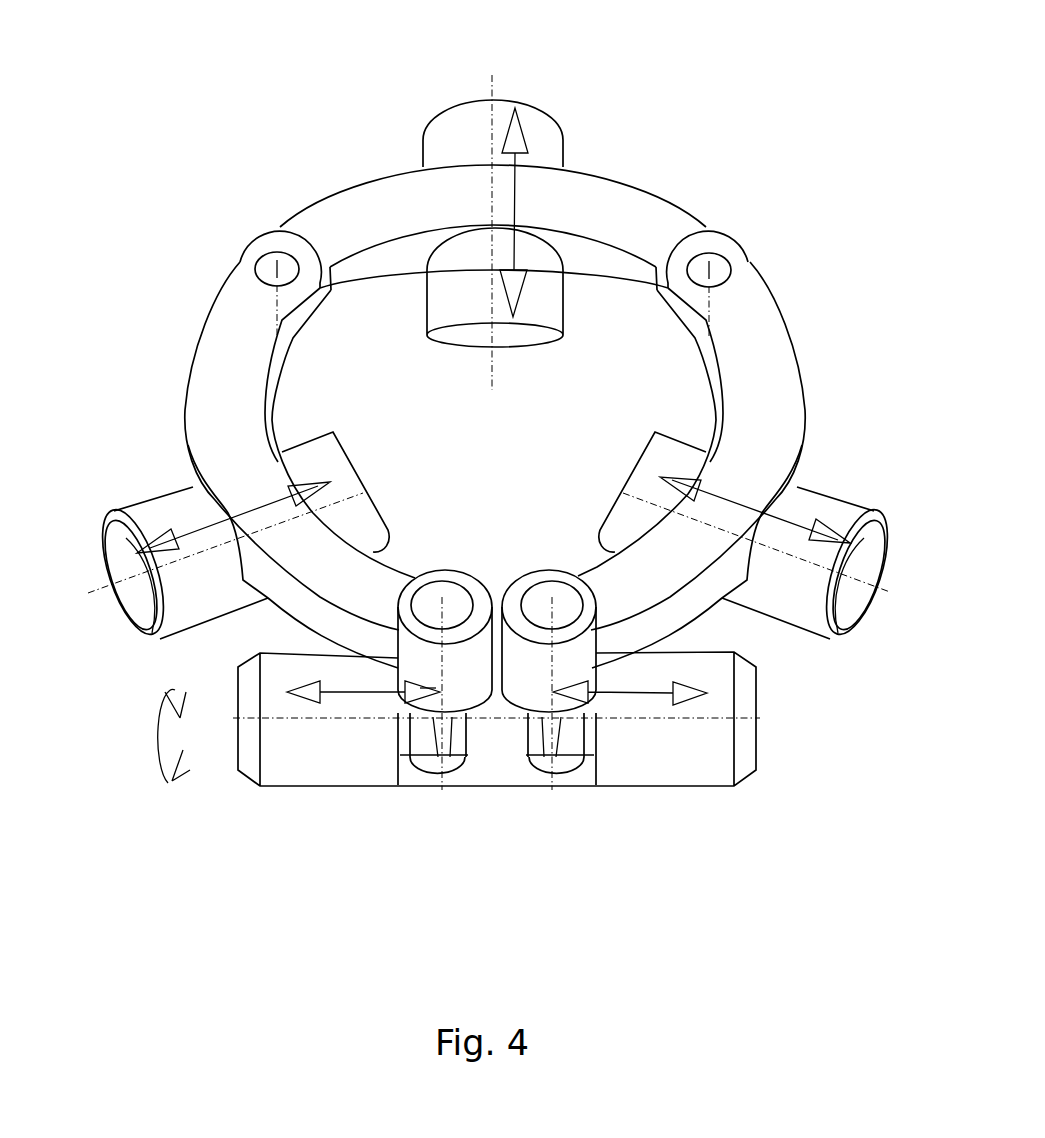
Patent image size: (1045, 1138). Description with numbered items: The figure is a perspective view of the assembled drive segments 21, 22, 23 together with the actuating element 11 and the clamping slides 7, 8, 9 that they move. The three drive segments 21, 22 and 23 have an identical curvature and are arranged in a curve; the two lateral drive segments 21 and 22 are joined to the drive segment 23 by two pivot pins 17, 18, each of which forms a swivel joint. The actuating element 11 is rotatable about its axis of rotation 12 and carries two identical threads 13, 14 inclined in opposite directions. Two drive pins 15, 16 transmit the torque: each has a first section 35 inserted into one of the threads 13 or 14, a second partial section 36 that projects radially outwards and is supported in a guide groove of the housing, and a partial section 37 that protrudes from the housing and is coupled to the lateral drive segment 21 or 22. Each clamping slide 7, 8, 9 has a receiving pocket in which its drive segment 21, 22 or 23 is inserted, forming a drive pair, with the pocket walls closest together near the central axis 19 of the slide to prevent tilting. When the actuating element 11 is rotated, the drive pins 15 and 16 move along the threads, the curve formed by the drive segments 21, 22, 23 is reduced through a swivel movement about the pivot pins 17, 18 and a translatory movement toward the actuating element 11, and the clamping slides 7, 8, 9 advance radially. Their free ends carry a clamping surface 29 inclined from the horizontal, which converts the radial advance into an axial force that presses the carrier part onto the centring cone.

The clamping slide 7 is at (195, 603).
The clamping slide 8 is at (802, 610).
The clamping slide 9 is at (470, 138).
The actuating element 11 is at (643, 770).
The axis of rotation 12 is at (292, 722).
The thread 13 is at (440, 750).
The thread 14 is at (575, 742).
The drive pin 15 is at (425, 625).
The drive pin 16 is at (570, 613).
The pivot pin 17 is at (270, 266).
The pivot pin 18 is at (720, 268).
The central axis 19 is at (88, 593).
The drive segment 21 is at (232, 390).
The drive segment 22 is at (757, 440).
The drive segment 23 is at (592, 208).
The clamping surface 29 is at (470, 318).
The first section 35 is at (437, 700).
The second partial section 36 is at (538, 700).
The partial section 37 is at (428, 690).